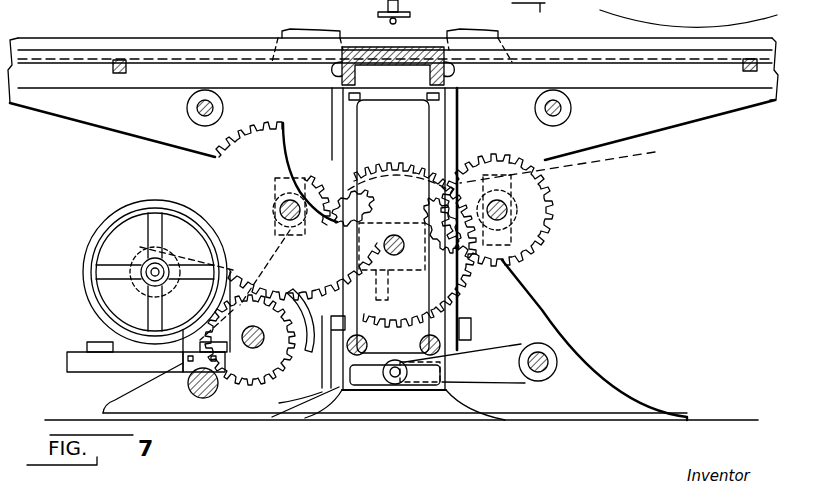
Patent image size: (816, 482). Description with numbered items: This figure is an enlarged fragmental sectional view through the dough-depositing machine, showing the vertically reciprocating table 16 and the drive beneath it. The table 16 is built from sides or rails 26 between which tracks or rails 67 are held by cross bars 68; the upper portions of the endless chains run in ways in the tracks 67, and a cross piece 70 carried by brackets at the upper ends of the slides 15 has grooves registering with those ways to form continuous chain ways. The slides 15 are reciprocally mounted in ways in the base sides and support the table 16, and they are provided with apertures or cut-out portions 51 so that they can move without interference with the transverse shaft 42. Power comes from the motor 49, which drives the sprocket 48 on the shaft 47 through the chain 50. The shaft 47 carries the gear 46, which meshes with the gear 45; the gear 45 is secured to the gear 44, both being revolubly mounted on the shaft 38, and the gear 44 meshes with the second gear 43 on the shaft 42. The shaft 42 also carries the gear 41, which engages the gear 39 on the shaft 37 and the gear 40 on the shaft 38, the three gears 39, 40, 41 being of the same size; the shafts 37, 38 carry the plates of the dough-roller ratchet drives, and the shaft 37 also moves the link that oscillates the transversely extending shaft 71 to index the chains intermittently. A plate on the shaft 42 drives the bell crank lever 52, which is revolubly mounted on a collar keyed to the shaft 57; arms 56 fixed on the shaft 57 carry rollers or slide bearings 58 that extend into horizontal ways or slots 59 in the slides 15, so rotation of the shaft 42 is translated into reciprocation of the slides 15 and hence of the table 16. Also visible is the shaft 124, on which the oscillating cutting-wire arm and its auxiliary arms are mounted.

The sides or rails 26 is at (70, 40).
The tracks or rails 67 is at (208, 55).
The cross bars 68 is at (120, 60).
The cross piece 70 is at (411, 58).
The gear 45 is at (68, 222).
The bell crank lever 52 is at (472, 19).
The shaft 57 is at (664, 345).
The reciprocating table 16 is at (688, 36).
The transversely extending shaft 71 is at (196, 108).
The shaft 124 is at (571, 108).
The gear 40 is at (213, 157).
The gear 44 is at (419, 160).
The apertures or cut-out portions 51 is at (572, 162).
The shaft 38 is at (278, 207).
The shaft 37 is at (553, 195).
The gear 39 is at (548, 238).
The gear 41 is at (476, 266).
The second gear 43 is at (462, 256).
The transverse shaft 42 is at (404, 252).
The motor 49 is at (110, 278).
The slides 15 is at (460, 335).
The shaft 47 is at (253, 348).
The gear 46 is at (285, 340).
The sprocket 48 is at (303, 352).
The chain 50 is at (320, 388).
The horizontal ways or slots 59 is at (372, 374).
The rollers or slide bearings 58 is at (401, 382).
The arms 56 is at (473, 372).